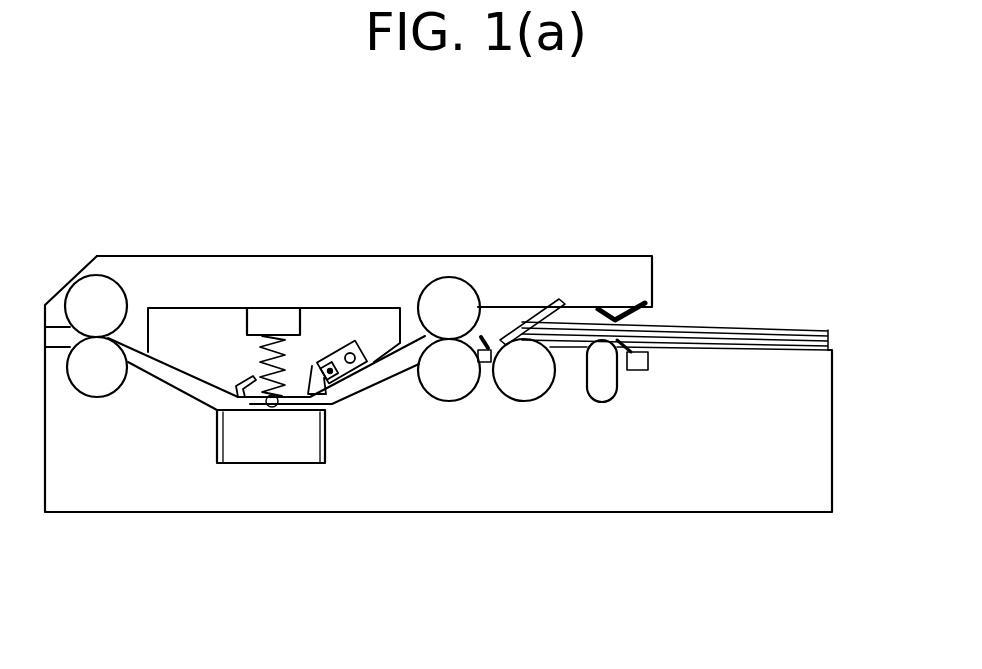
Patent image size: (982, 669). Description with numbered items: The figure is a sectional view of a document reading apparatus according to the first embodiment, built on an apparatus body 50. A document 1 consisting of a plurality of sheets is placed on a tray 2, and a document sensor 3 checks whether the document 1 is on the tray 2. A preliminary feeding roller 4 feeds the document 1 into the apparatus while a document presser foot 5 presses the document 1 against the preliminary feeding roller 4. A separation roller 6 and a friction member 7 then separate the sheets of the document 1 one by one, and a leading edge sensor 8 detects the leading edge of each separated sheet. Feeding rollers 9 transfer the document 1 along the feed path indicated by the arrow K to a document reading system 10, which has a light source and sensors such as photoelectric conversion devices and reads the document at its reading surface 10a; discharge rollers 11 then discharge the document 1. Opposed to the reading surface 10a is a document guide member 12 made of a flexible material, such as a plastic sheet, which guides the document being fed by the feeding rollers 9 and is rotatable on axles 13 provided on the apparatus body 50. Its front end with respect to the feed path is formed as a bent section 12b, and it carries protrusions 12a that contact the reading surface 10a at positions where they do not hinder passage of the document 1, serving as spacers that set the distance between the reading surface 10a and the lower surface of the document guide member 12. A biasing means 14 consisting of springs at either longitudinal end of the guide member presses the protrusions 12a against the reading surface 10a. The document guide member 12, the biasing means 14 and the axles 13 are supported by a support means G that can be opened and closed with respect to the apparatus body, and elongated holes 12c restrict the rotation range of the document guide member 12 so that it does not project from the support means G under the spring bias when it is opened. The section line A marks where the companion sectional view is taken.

The document 1 is at (768, 337).
The tray 2 is at (800, 353).
The document sensor 3 is at (640, 360).
The preliminary feeding roller 4 is at (622, 395).
The document presser foot 5 is at (634, 304).
The separation roller 6 is at (527, 403).
The friction member 7 is at (542, 318).
The leading edge sensor 8 is at (486, 338).
The feeding rollers 9 is at (422, 332).
The document reading system 10 is at (243, 448).
The reading surface 10a is at (290, 411).
The discharge rollers 11 is at (75, 313).
The document guide member 12 is at (305, 385).
The protrusions 12a is at (270, 407).
The bent section 12b is at (247, 387).
The elongated holes 12c is at (328, 377).
The axles 13 is at (350, 364).
The biasing means 14 is at (286, 330).
The apparatus body 50 is at (408, 192).
The support means G is at (212, 270).
The section line A— A is at (276, 247).
The arrow K is at (338, 613).